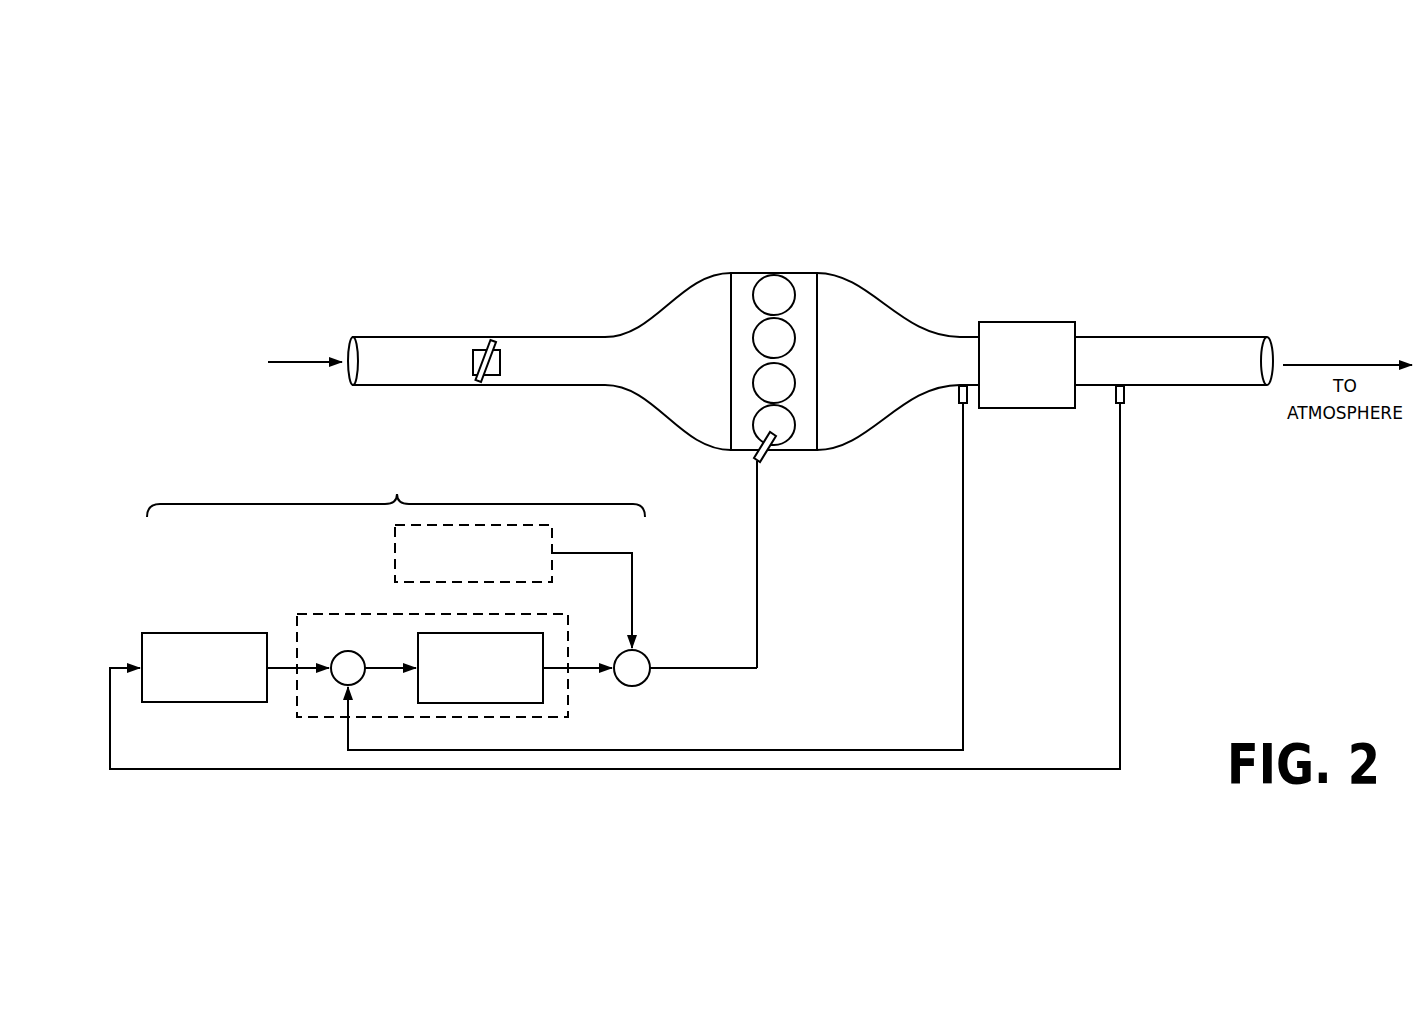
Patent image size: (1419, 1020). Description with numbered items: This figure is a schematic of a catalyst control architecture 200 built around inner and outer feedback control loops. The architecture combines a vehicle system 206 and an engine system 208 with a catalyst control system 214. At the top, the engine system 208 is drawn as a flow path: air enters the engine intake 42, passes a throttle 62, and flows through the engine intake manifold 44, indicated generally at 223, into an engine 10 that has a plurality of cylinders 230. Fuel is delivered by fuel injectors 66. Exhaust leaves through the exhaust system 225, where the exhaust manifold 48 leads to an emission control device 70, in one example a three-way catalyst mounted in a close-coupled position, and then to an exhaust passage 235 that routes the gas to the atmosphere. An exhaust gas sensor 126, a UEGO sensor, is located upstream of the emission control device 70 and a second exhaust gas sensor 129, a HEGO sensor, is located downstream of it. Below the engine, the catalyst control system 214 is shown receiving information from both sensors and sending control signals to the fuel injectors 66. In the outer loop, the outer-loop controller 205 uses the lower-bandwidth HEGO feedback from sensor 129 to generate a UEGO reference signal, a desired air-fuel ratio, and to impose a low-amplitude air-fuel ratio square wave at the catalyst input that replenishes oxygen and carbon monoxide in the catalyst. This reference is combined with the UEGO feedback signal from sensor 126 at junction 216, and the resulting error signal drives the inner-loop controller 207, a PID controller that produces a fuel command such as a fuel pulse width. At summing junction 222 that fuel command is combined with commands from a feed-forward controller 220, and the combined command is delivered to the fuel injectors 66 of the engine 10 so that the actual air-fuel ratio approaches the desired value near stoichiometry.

The catalyst control architecture 200 is at (233, 143).
The vehicle system 206 is at (303, 268).
The engine system 208 is at (838, 247).
The engine intake 42 is at (418, 381).
The throttle 62 is at (500, 366).
The intake manifold 223 is at (663, 296).
The engine intake manifold 44 is at (657, 361).
The engine 10 is at (818, 345).
The cylinders 230 is at (773, 275).
The fuel injectors 66 is at (766, 456).
The exhaust system 225 is at (898, 297).
The exhaust manifold 48 is at (900, 361).
The emission control device 70 is at (1018, 322).
The exhaust passage 235 is at (1225, 337).
The exhaust gas sensor 126 is at (959, 395).
The exhaust gas sensor 129 is at (1116, 395).
The catalyst control system 214 is at (396, 483).
The feed-forward controller 220 is at (513, 586).
The outer-loop controller 205 is at (235, 667).
The junction 216 is at (355, 654).
The inner-loop controller 207 is at (515, 668).
The summing junction 222 is at (638, 684).